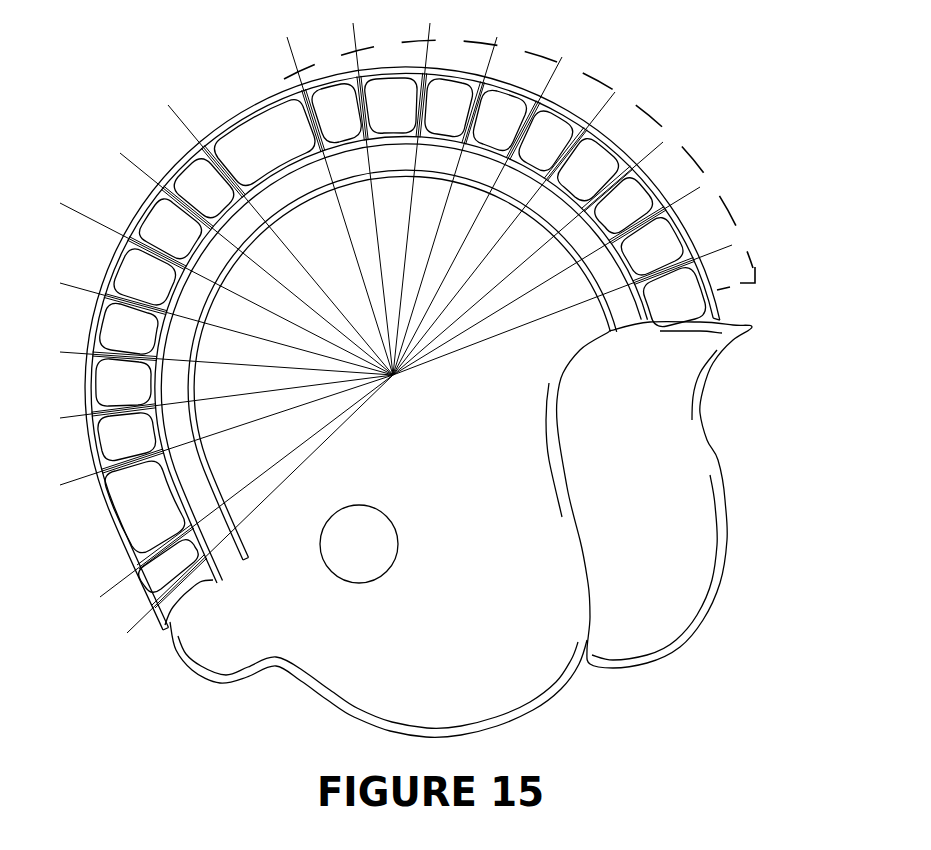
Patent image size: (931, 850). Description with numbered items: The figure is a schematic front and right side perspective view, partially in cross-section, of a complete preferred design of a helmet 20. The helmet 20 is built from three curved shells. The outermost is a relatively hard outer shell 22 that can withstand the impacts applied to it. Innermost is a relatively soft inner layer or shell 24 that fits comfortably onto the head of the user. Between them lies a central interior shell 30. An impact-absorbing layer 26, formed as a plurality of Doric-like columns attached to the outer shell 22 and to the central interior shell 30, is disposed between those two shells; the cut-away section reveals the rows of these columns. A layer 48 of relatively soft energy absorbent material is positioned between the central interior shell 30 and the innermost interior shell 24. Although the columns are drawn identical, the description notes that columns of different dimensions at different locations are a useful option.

The helmet 20 is at (122, 622).
The outer shell 22 is at (718, 303).
The impact-absorbing layer 26 is at (730, 323).
The central interior shell 30 is at (638, 326).
The layer of relatively soft energy absorbent material 48 is at (620, 335).
The innermost interior shell 24 is at (703, 414).